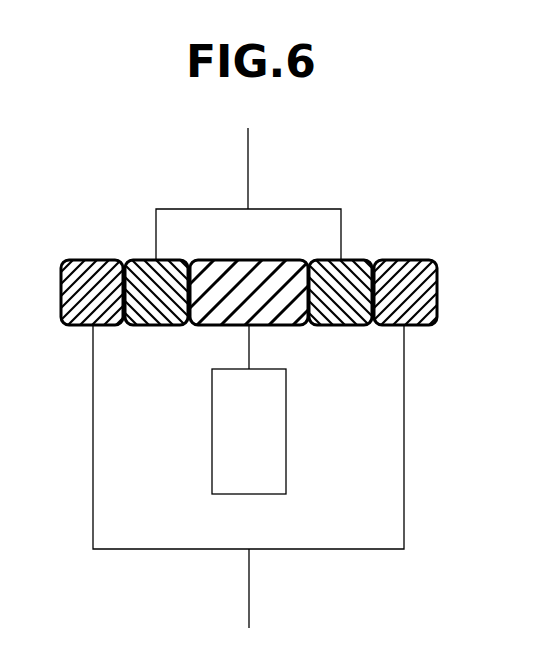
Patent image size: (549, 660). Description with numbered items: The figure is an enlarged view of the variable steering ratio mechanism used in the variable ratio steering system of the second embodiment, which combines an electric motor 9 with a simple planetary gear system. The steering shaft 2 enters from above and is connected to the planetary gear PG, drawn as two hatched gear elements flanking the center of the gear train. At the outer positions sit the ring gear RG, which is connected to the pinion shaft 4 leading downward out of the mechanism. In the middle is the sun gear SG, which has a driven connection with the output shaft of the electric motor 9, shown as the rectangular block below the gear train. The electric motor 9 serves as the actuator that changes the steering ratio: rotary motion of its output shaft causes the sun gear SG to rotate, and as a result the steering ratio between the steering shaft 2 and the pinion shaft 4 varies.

The steering shaft 2 is at (250, 163).
The pinion shaft 4 is at (251, 588).
The electric motor 9 is at (275, 427).
The ring gear RG is at (98, 278).
The planetary gear PG is at (136, 280).
The sun gear SG is at (287, 305).